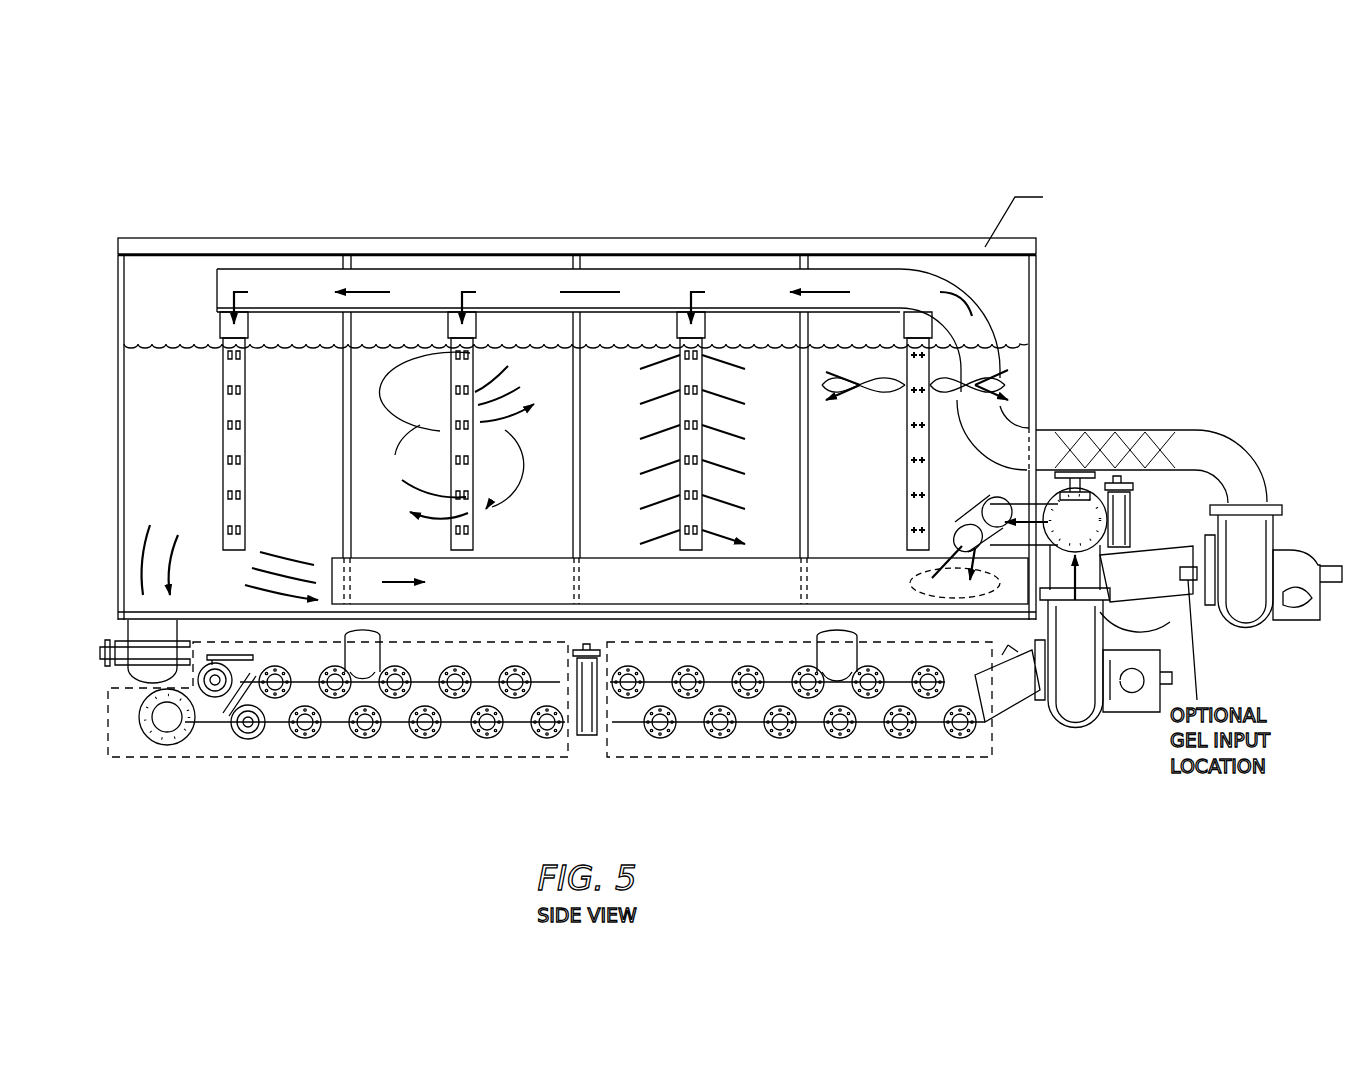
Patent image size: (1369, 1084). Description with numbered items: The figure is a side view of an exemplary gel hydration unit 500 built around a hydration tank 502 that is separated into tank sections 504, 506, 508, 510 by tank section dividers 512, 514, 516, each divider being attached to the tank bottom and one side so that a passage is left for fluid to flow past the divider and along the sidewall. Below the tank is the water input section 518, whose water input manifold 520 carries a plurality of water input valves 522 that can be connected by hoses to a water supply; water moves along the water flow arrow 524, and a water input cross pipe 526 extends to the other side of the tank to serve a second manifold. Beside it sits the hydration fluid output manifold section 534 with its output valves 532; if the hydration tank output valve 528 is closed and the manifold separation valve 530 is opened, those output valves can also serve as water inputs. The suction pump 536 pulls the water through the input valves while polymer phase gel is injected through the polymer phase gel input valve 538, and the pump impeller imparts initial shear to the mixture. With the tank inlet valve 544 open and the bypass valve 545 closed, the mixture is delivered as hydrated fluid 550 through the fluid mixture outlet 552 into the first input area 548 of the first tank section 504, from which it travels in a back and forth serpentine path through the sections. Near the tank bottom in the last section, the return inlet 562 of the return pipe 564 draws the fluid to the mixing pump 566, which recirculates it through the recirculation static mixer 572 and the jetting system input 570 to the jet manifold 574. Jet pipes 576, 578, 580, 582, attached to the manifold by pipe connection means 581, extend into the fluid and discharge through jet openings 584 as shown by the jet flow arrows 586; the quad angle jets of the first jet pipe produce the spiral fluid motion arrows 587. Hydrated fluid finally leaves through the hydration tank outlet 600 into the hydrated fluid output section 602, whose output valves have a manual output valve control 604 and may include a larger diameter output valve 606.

The gel hydration unit 500 is at (478, 137).
The hydration tank 502 is at (1037, 292).
The first tank section 504 is at (840, 366).
The tank section 506 is at (612, 366).
The third tank section 508 is at (380, 368).
The Nth tank section 510 is at (152, 367).
The tank section divider 512 is at (800, 472).
The tank section divider 514 is at (573, 522).
The tank section divider 516 is at (343, 462).
The water input section 518 is at (737, 758).
The water input manifold 520 is at (632, 725).
The water input valve 522 is at (778, 740).
The water flow arrow 524 is at (940, 740).
The water input cross pipe 526 is at (817, 655).
The hydration tank output valve 528 is at (175, 630).
The manifold separation valve 530 is at (590, 740).
The output valve 532 is at (363, 740).
The hydration fluid output manifold section 534 is at (522, 740).
The suction pump 536 is at (1075, 734).
The polymer phase gel input valve 538 is at (1015, 702).
The tank inlet valve 544 is at (1042, 492).
The bypass valve 545 is at (1132, 470).
The first input area 548 is at (912, 578).
The hydrated fluid 550 is at (565, 450).
The fluid mixture outlet 552 is at (955, 520).
The return inlet 562 is at (330, 565).
The return pipe 564 is at (1182, 516).
The mixing pump 566 is at (1245, 628).
The jetting system input 570 is at (1013, 412).
The recirculation static mixer 572 is at (1103, 430).
The jet manifold 574 is at (883, 282).
The first jet pipe 576 is at (907, 462).
The jet pipe 578 is at (702, 380).
The third jet pipe 580 is at (451, 530).
The pipe connection means 581 is at (446, 326).
The Mth jet pipe 582 is at (222, 406).
The jet openings 584 is at (246, 427).
The jet flow arrows 586 is at (680, 458).
The spiral fluid motion arrows 587 is at (852, 400).
The hydration tank outlet 600 is at (140, 628).
The hydrated fluid output section 602 is at (298, 758).
The manual output valve control 604 is at (222, 740).
The larger diameter output valve 606 is at (166, 746).